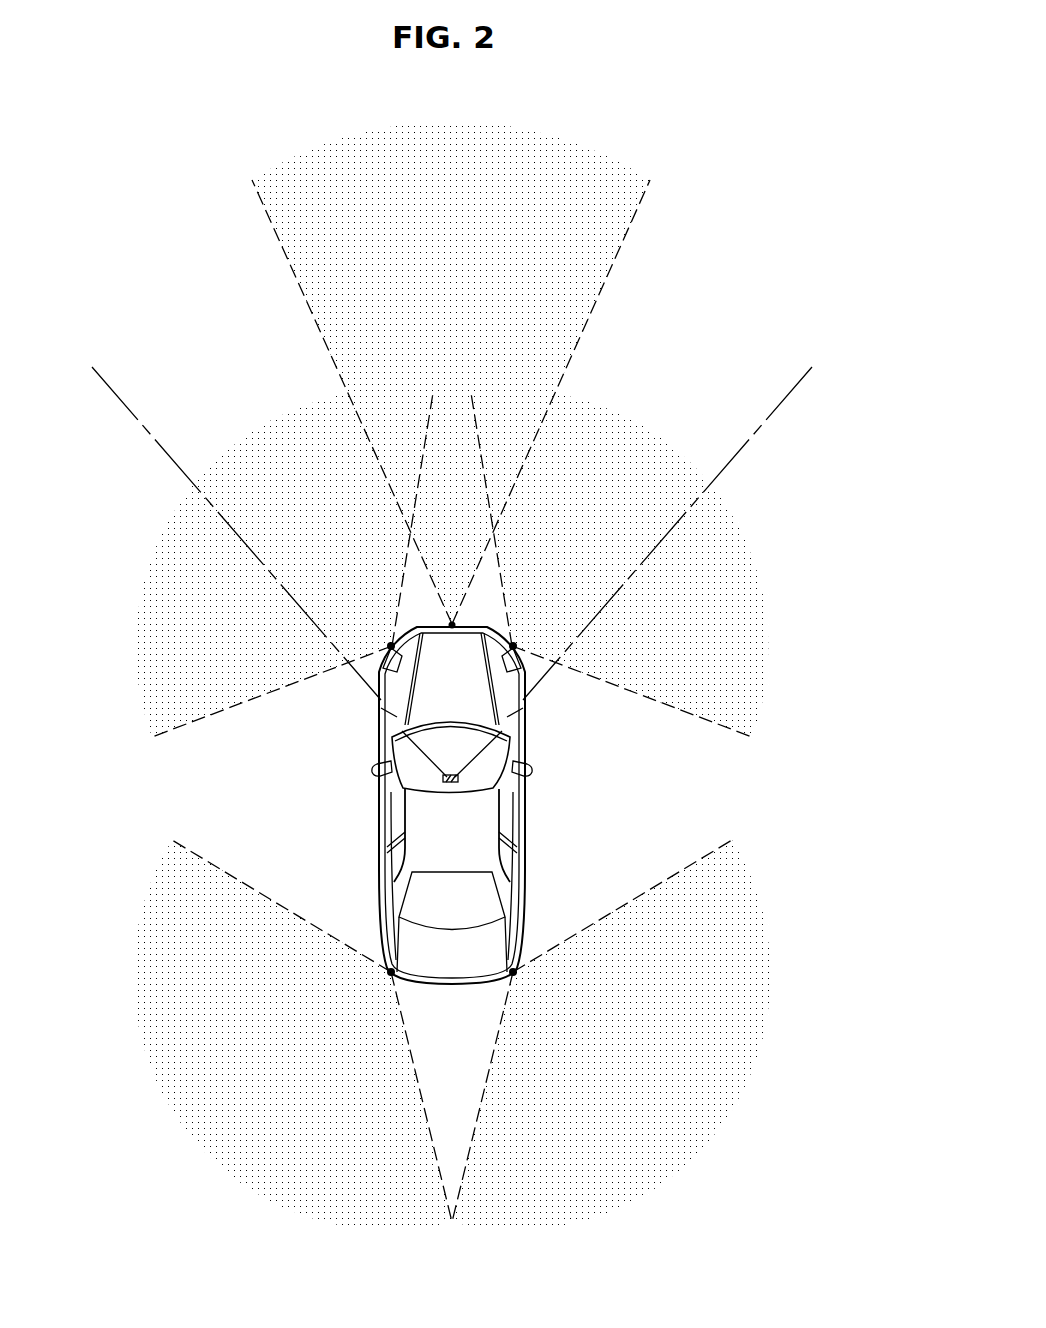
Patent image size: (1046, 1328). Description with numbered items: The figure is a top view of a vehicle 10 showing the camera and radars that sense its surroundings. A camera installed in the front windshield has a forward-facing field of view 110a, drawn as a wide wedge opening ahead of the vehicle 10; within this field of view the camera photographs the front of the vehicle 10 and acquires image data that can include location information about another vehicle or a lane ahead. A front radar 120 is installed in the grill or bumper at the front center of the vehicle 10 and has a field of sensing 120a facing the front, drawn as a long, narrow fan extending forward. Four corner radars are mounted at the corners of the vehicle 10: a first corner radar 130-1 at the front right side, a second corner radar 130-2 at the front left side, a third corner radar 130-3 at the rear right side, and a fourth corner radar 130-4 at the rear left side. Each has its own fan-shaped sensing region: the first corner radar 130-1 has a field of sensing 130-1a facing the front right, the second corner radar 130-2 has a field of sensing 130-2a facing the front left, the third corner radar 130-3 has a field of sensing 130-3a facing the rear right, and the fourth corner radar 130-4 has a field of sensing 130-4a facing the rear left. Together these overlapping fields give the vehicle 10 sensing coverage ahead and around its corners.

The vehicle 10 is at (513, 805).
The field of view 110a is at (767, 418).
The front radar 120 is at (452, 622).
The field of sensing 120a is at (602, 256).
The first corner radar 130-1 is at (513, 644).
The second corner radar 130-2 is at (391, 644).
The third corner radar 130-3 is at (513, 974).
The fourth corner radar 130-4 is at (391, 974).
The field of sensing 130-1a is at (643, 442).
The field of sensing 130-2a is at (257, 442).
The field of sensing 130-3a is at (713, 1108).
The field of sensing 130-4a is at (188, 1108).